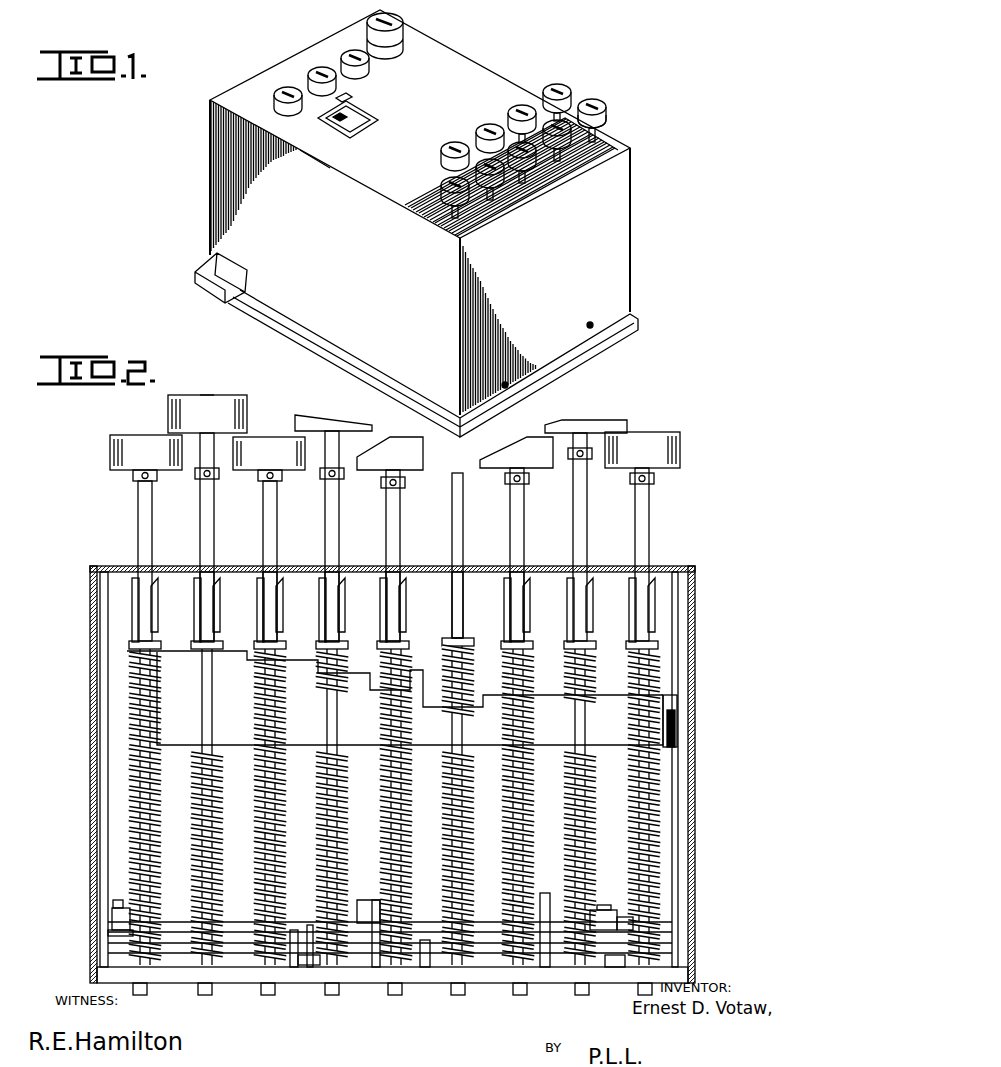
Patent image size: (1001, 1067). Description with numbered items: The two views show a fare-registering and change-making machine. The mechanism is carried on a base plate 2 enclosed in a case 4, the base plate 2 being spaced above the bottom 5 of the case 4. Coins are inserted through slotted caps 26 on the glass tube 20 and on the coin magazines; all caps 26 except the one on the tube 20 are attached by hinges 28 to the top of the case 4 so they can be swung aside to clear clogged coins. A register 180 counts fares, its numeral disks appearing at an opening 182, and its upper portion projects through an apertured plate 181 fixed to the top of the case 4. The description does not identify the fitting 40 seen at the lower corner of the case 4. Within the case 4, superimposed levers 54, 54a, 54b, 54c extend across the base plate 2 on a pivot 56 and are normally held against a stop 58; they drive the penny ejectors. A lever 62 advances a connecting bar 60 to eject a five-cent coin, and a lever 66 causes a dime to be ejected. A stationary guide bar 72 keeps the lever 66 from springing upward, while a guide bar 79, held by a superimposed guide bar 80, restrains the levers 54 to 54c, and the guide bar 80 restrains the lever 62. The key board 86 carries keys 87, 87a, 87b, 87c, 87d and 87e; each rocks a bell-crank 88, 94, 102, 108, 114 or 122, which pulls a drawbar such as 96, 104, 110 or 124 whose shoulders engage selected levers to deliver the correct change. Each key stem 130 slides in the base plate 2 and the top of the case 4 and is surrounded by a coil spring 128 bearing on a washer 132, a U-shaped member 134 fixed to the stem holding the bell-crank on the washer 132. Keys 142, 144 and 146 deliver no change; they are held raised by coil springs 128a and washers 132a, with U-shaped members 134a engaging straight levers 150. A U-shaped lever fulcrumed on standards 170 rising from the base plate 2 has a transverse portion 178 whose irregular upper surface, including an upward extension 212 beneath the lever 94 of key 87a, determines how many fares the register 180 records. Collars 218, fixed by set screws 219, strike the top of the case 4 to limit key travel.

In FIG. 2, the base plate 2 is at (312, 968).
In FIG. 1, the case 4 is at (618, 250).
In FIG. 2, the case 4 is at (100, 737).
In FIG. 1, the bottom 5 is at (292, 334).
In FIG. 1, the glass tube 20 is at (403, 28).
In FIG. 1, the slotted caps 26 is at (350, 50).
In FIG. 1, the hinges 28 is at (352, 93).
In FIG. 1, the corner bracket 40 is at (195, 277).
In FIG. 2, the lever 54 is at (185, 966).
In FIG. 2, the lever 54a is at (186, 968).
In FIG. 2, the lever 54b is at (246, 968).
In FIG. 2, the lever 54c is at (252, 968).
In FIG. 2, the pivot 56 is at (113, 904).
In FIG. 2, the stop 58 is at (545, 968).
In FIG. 2, the connecting bar 60 is at (378, 905).
In FIG. 2, the lever 62 is at (108, 934).
In FIG. 2, the lever 66 is at (633, 918).
In FIG. 2, the stationary guide bar 72 is at (112, 918).
In FIG. 2, the guide bar 79 is at (615, 968).
In FIG. 2, the superimposed guide bar 80 is at (608, 908).
In FIG. 1, the key board 86 is at (598, 98).
In FIG. 2, the key board 86 is at (223, 517).
In FIG. 1, the key 87 is at (590, 155).
In FIG. 2, the key 87 is at (516, 539).
In FIG. 1, the key 87a is at (562, 178).
In FIG. 2, the key 87a is at (390, 539).
In FIG. 1, the key 87b is at (522, 196).
In FIG. 2, the key 87b is at (269, 539).
In FIG. 1, the key 87c is at (514, 110).
In FIG. 1, the key 87d is at (486, 126).
In FIG. 2, the key 87d is at (331, 420).
In FIG. 1, the key 87e is at (451, 147).
In FIG. 2, the key 87e is at (206, 410).
In FIG. 2, the bell-crank 88 is at (537, 578).
In FIG. 2, the bell-crank 94 is at (410, 578).
In FIG. 2, the drawbar 96 is at (362, 968).
In FIG. 2, the bell-crank 102 is at (290, 578).
In FIG. 2, the draw bar 104 is at (304, 972).
In FIG. 2, the bell-crank 108 is at (470, 578).
In FIG. 2, the draw bar 110 is at (425, 968).
In FIG. 2, the bell-crank 114 is at (352, 578).
In FIG. 2, the bell-crank 122 is at (222, 578).
In FIG. 2, the draw bar 124 is at (294, 968).
In FIG. 1, the coil spring 128 is at (528, 185).
In FIG. 2, the coil spring 128 is at (500, 676).
In FIG. 2, the coil springs 128a is at (130, 828).
In FIG. 2, the key stem 130 is at (505, 487).
In FIG. 2, the washer 132 is at (398, 650).
In FIG. 2, the washers 132a is at (130, 645).
In FIG. 2, the U-shaped member 134 is at (332, 618).
In FIG. 2, the U-shaped members 134a is at (150, 618).
In FIG. 1, the key 142 is at (606, 109).
In FIG. 2, the key 142 is at (682, 450).
In FIG. 1, the key 144 is at (560, 84).
In FIG. 2, the key 144 is at (612, 420).
In FIG. 1, the key 146 is at (478, 222).
In FIG. 2, the key 146 is at (146, 538).
In FIG. 2, the levers 150 is at (135, 602).
In FIG. 2, the standards 170 is at (678, 840).
In FIG. 2, the transverse portion 178 is at (417, 699).
In FIG. 1, the register 180 is at (352, 137).
In FIG. 1, the apertured plate 181 is at (322, 160).
In FIG. 1, the opening 182 is at (309, 126).
In FIG. 2, the upward extension 212 is at (420, 690).
In FIG. 1, the collars 218 is at (598, 126).
In FIG. 2, the collars 218 is at (655, 478).
In FIG. 2, the set screw 219 is at (650, 490).